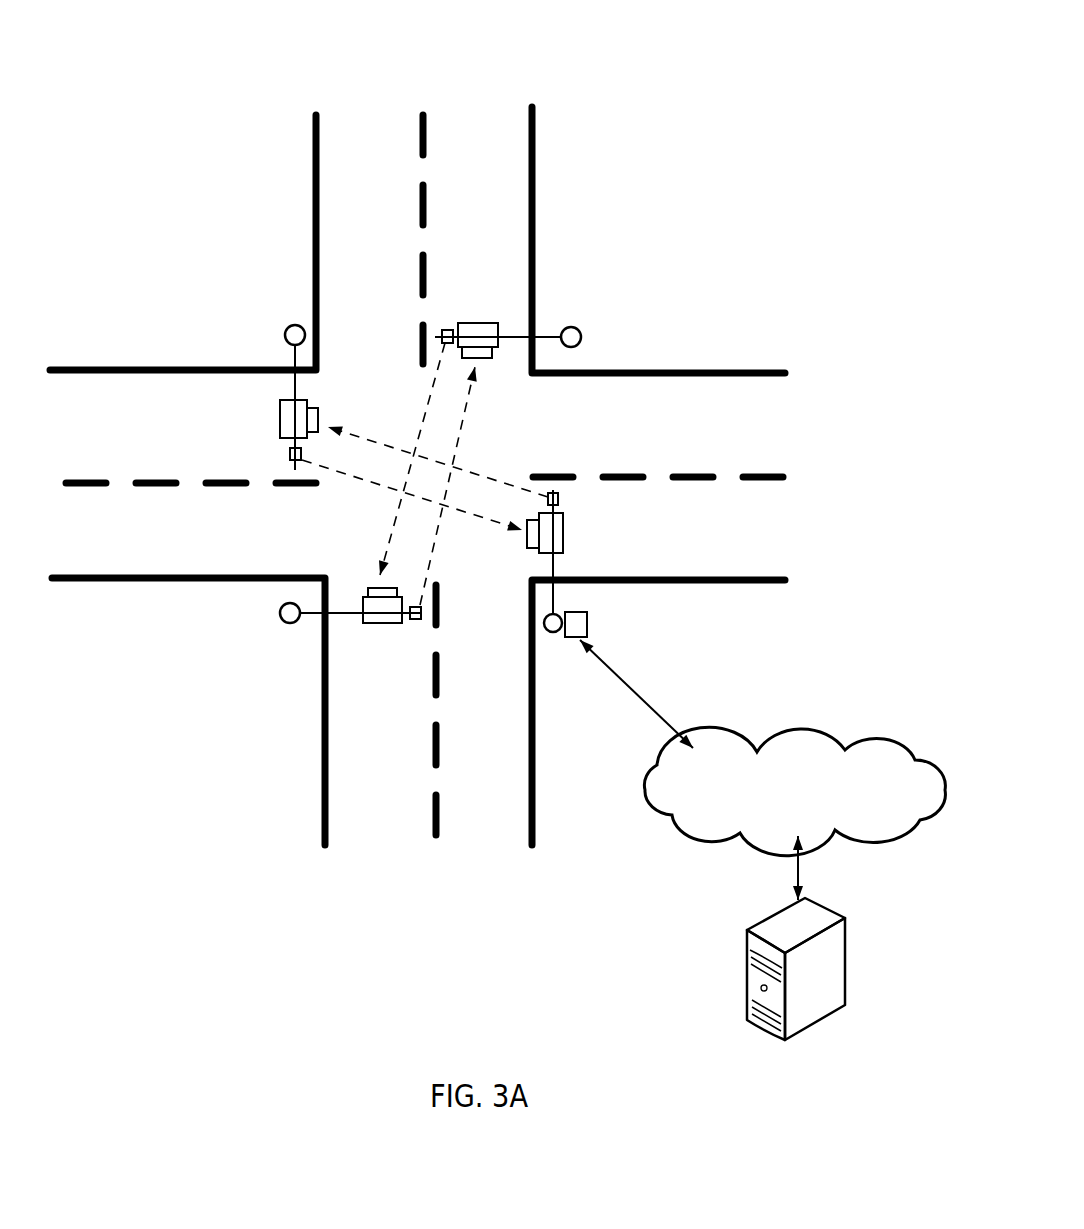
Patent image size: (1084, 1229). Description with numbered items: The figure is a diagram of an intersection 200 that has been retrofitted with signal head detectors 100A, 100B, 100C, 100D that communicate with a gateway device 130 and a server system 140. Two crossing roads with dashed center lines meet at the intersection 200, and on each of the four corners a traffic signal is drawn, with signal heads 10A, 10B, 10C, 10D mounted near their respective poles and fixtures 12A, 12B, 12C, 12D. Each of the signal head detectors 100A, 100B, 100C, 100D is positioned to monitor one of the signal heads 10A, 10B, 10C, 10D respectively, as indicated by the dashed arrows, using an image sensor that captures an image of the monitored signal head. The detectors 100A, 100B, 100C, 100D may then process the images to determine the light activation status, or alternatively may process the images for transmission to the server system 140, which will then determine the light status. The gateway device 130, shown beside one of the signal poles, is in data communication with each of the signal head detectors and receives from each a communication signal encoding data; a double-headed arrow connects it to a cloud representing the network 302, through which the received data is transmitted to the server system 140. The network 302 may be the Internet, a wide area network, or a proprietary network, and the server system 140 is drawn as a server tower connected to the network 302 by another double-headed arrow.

The intersection 200 is at (125, 50).
The traffic signal 12A is at (294, 362).
The traffic signal 12B is at (549, 337).
The traffic signal 12C is at (553, 568).
The traffic signal 12D is at (303, 617).
The signal head 10A is at (280, 418).
The signal head 10B is at (492, 358).
The signal head 10C is at (563, 530).
The signal head 10D is at (363, 597).
The signal head detector 100A is at (556, 493).
The signal head detector 100B is at (415, 619).
The signal head detector 100C is at (292, 452).
The signal head detector 100D is at (455, 323).
The gateway device 130 is at (565, 637).
The network 302 is at (815, 811).
The server system 140 is at (848, 955).